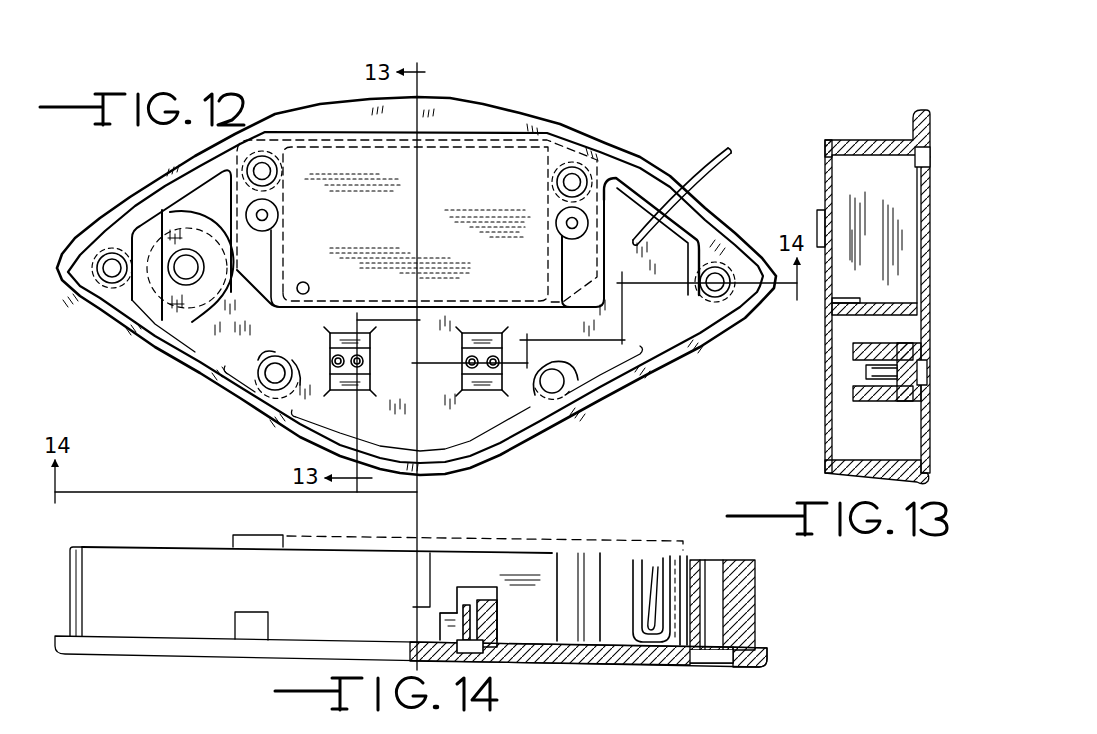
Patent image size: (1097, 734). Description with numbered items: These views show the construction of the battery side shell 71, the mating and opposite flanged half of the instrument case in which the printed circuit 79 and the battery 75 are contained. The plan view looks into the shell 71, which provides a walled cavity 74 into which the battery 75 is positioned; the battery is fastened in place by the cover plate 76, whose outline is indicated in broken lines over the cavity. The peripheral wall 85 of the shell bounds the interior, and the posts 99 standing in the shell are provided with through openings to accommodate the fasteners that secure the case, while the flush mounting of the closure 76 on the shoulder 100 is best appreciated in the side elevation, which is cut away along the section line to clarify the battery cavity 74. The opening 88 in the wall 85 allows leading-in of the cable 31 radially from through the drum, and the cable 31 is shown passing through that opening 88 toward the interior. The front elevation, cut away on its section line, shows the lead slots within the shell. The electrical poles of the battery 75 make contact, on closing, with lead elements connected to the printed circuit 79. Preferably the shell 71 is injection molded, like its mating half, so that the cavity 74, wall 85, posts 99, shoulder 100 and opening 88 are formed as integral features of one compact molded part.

In FIG. 12, the cable 31 is at (704, 166).
In FIG. 14, the cable 31 is at (661, 582).
In FIG. 12, the battery side shell 71 is at (667, 122).
In FIG. 13, the battery side shell 71 is at (857, 115).
In FIG. 14, the battery side shell 71 is at (612, 498).
In FIG. 12, the walled cavity 74 is at (332, 307).
In FIG. 13, the walled cavity 74 is at (850, 193).
In FIG. 12, the battery 75 is at (547, 133).
In FIG. 12, the cover plate 76 is at (280, 137).
In FIG. 14, the printed circuit 79 is at (460, 537).
In FIG. 12, the peripheral wall 85 is at (483, 105).
In FIG. 13, the peripheral wall 85 is at (913, 475).
In FIG. 14, the peripheral wall 85 is at (765, 652).
In FIG. 12, the opening 88 is at (676, 204).
In FIG. 14, the opening 88 is at (657, 645).
In FIG. 12, the posts 99 is at (538, 392).
In FIG. 14, the posts 99 is at (580, 598).
In FIG. 13, the shoulder 100 is at (930, 160).